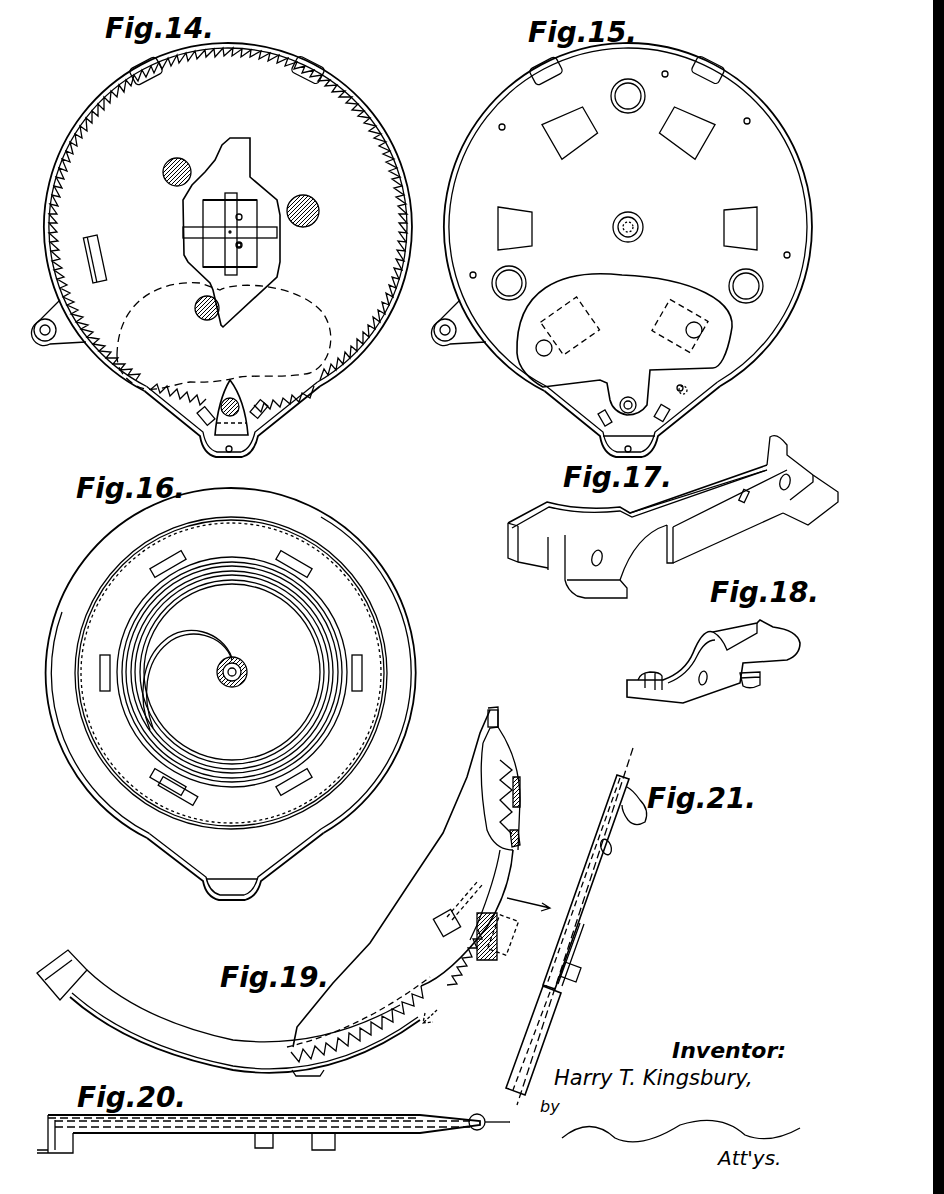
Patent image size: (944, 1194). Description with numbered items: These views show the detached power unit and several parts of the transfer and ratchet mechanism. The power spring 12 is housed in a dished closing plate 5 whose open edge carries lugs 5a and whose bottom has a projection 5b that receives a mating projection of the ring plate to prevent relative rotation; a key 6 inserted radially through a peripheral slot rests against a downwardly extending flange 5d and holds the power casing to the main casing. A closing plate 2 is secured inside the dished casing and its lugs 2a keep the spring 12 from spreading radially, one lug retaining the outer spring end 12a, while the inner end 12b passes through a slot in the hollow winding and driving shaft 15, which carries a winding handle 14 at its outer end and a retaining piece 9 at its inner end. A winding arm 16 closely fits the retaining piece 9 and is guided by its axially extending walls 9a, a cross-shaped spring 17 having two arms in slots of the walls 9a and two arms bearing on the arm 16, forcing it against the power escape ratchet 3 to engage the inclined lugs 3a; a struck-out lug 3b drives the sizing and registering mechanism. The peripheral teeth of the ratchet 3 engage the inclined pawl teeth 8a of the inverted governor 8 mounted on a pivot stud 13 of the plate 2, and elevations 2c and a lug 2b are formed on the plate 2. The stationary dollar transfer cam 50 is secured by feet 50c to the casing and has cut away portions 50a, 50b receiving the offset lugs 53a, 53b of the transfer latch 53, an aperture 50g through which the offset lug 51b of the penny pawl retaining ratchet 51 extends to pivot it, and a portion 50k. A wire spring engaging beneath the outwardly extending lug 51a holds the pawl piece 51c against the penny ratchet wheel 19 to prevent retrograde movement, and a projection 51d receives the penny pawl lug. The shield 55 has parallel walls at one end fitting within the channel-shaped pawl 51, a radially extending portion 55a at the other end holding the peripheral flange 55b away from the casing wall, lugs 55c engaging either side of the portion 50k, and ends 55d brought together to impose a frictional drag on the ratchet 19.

In FIG. 15, the closing plate 2 is at (775, 152).
In FIG. 16, the closing plate 2 is at (344, 548).
In FIG. 15, the lugs of closing plate 2a is at (560, 124).
In FIG. 16, the lugs of closing plate 2a is at (150, 560).
In FIG. 15, the lug 2b is at (686, 396).
In FIG. 15, the elevations 2c is at (629, 102).
In FIG. 14, the power escape ratchet 3 is at (330, 116).
In FIG. 14, the inclined upwardly struck lugs 3a is at (166, 168).
In FIG. 14, the struck-out lug 3b is at (105, 238).
In FIG. 14, the dished closing plate 5 is at (372, 128).
In FIG. 15, the dished closing plate 5 is at (750, 108).
In FIG. 16, the dished closing plate 5 is at (402, 632).
In FIG. 14, the lugs 5a is at (134, 68).
In FIG. 15, the lugs 5a is at (538, 70).
In FIG. 14, the projection 5b is at (300, 405).
In FIG. 15, the projection 5b is at (700, 418).
In FIG. 16, the projection 5b is at (190, 858).
In FIG. 15, the downwardly extending flange 5d is at (612, 446).
In FIG. 16, the downwardly extending flange 5d is at (240, 898).
In FIG. 14, the key 6 is at (236, 438).
In FIG. 14, the inverted governor 8 is at (340, 360).
In FIG. 15, the inverted governor 8 is at (650, 290).
In FIG. 14, the inclined pawl teeth 8a is at (200, 418).
In FIG. 15, the inclined pawl teeth 8a is at (600, 416).
In FIG. 14, the retaining piece 9 is at (262, 204).
In FIG. 14, the axially extending walls 9a is at (220, 198).
In FIG. 16, the spring 12 is at (340, 612).
In FIG. 16, the one end of spring 12a is at (192, 800).
In FIG. 16, the other end of spring 12b is at (236, 660).
In FIG. 14, the pivot stud 13 is at (221, 382).
In FIG. 15, the pivot stud 13 is at (623, 396).
In FIG. 14, the winding handle 14 is at (60, 338).
In FIG. 15, the winding handle 14 is at (462, 338).
In FIG. 14, the hollow winding and driving shaft 15 is at (243, 247).
In FIG. 15, the hollow winding and driving shaft 15 is at (635, 217).
In FIG. 16, the hollow winding and driving shaft 15 is at (248, 672).
In FIG. 14, the winding arm 16 is at (252, 180).
In FIG. 14, the cross-shaped spring 17 is at (185, 230).
In FIG. 19, the penny ratchet wheel 19 is at (437, 850).
In FIG. 21, the penny ratchet wheel 19 is at (525, 1047).
In FIG. 17, the dollar transfer cam 50 is at (690, 500).
In FIG. 17, the cut away portion 50a is at (600, 503).
In FIG. 17, the cut away portion 50b is at (556, 575).
In FIG. 17, the feet 50c is at (600, 598).
In FIG. 17, the aperture 50g is at (742, 490).
In FIG. 17, the portion of fixed cam 50k is at (512, 523).
In FIG. 19, the penny pawl retaining ratchet 51 is at (497, 852).
In FIG. 21, the penny pawl retaining ratchet 51 is at (597, 877).
In FIG. 19, the outwardly extending lug 51a is at (488, 720).
In FIG. 21, the outwardly extending lug 51a is at (645, 822).
In FIG. 19, the offset lug 51b is at (447, 912).
In FIG. 21, the offset lug 51b is at (580, 975).
In FIG. 19, the pawl piece 51c is at (520, 795).
In FIG. 19, the projection 51d is at (498, 940).
In FIG. 18, the transfer latch 53 is at (723, 677).
In FIG. 18, the offset lug 53a is at (762, 680).
In FIG. 18, the offset lug 53b is at (657, 675).
In FIG. 19, the shield 55 is at (148, 1010).
In FIG. 20, the shield 55 is at (275, 1115).
In FIG. 19, the radially extending portion 55a is at (70, 965).
In FIG. 20, the radially extending portion 55a is at (62, 1153).
In FIG. 19, the peripheral flange 55b is at (200, 1036).
In FIG. 19, the lugs 55c is at (312, 1068).
In FIG. 20, the lugs 55c is at (320, 1150).
In FIG. 20, the ends of shield 55d is at (476, 1130).
In FIG. 21, the ends of shield 55d is at (580, 932).